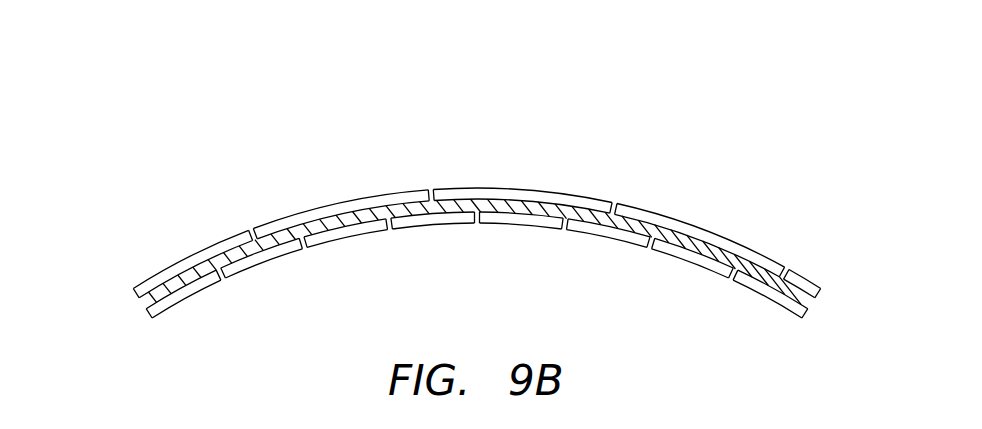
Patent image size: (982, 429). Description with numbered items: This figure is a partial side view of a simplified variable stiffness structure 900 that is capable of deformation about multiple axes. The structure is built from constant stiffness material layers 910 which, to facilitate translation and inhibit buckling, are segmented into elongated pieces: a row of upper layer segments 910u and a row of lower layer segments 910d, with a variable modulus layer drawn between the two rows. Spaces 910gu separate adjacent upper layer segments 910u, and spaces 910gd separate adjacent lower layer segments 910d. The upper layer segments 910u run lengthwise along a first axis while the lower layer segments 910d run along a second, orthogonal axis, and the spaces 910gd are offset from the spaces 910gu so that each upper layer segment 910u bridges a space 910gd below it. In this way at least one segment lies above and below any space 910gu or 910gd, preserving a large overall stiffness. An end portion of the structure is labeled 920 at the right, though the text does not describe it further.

The variable stiffness structure 900 is at (178, 188).
The constant stiffness material layers 910 is at (151, 318).
The upper layer segments 910u is at (157, 276).
The lower layer segments 910d is at (167, 310).
The spaces between the upper layer segments 910gu is at (245, 231).
The spaces between the lower layer segments 910gd is at (222, 279).
The end portion 920 is at (808, 300).